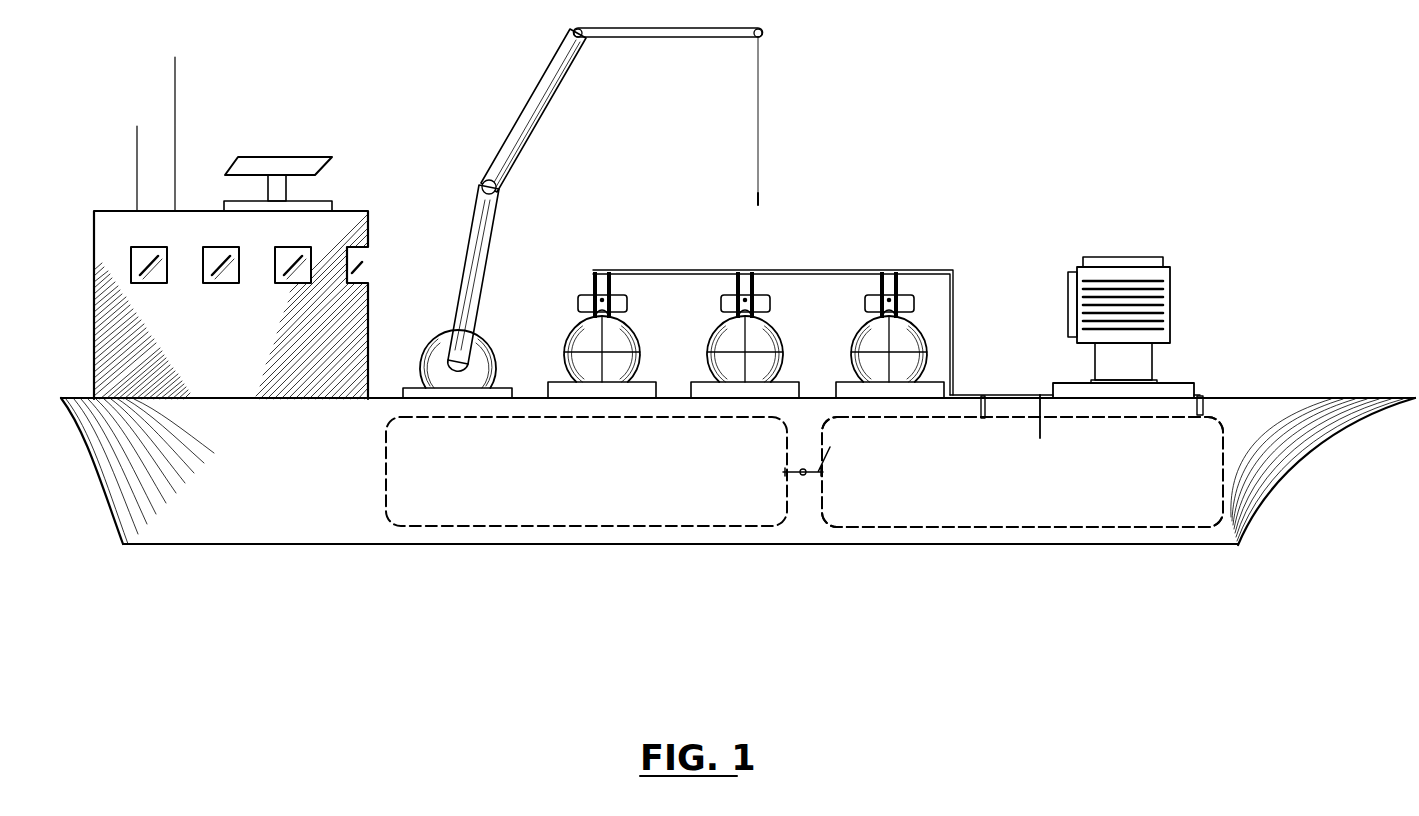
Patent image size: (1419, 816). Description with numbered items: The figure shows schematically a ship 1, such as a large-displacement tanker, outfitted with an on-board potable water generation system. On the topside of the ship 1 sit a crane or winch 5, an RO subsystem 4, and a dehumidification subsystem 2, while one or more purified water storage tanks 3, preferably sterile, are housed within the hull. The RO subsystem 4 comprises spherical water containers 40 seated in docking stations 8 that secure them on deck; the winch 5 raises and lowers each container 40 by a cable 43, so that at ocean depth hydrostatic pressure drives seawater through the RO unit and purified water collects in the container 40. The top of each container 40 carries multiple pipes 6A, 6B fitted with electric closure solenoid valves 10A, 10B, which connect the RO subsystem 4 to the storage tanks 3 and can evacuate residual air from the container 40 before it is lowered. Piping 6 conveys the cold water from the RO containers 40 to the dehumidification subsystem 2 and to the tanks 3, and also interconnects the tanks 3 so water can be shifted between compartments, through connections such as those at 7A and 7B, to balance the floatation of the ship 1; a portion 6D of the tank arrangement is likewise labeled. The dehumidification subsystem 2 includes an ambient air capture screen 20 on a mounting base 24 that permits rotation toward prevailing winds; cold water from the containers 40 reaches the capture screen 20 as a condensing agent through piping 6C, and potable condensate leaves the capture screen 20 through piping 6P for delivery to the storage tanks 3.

The ship 1 is at (1268, 397).
The dehumidification subsystem 2 is at (1152, 278).
The purified water storage tanks 3 is at (840, 508).
The RO subsystem 4 is at (719, 295).
The crane or winch 5 is at (528, 107).
The piping 6 is at (898, 328).
The pipe 6A is at (880, 280).
The pipe 6B is at (910, 277).
The piping 6C is at (1044, 434).
The tank compartment 6D is at (1022, 472).
The piping 6P is at (980, 410).
The deck pipe 7A is at (1015, 397).
The tank connector 7B is at (803, 472).
The docking stations 8 is at (565, 387).
The electric closure solenoid valve 10A is at (593, 288).
The electric closure solenoid valve 10B is at (611, 287).
The ambient air capture screen 20 is at (1113, 256).
The mounting base 24 is at (1172, 388).
The water container 40 is at (857, 330).
The cable 43 is at (759, 119).